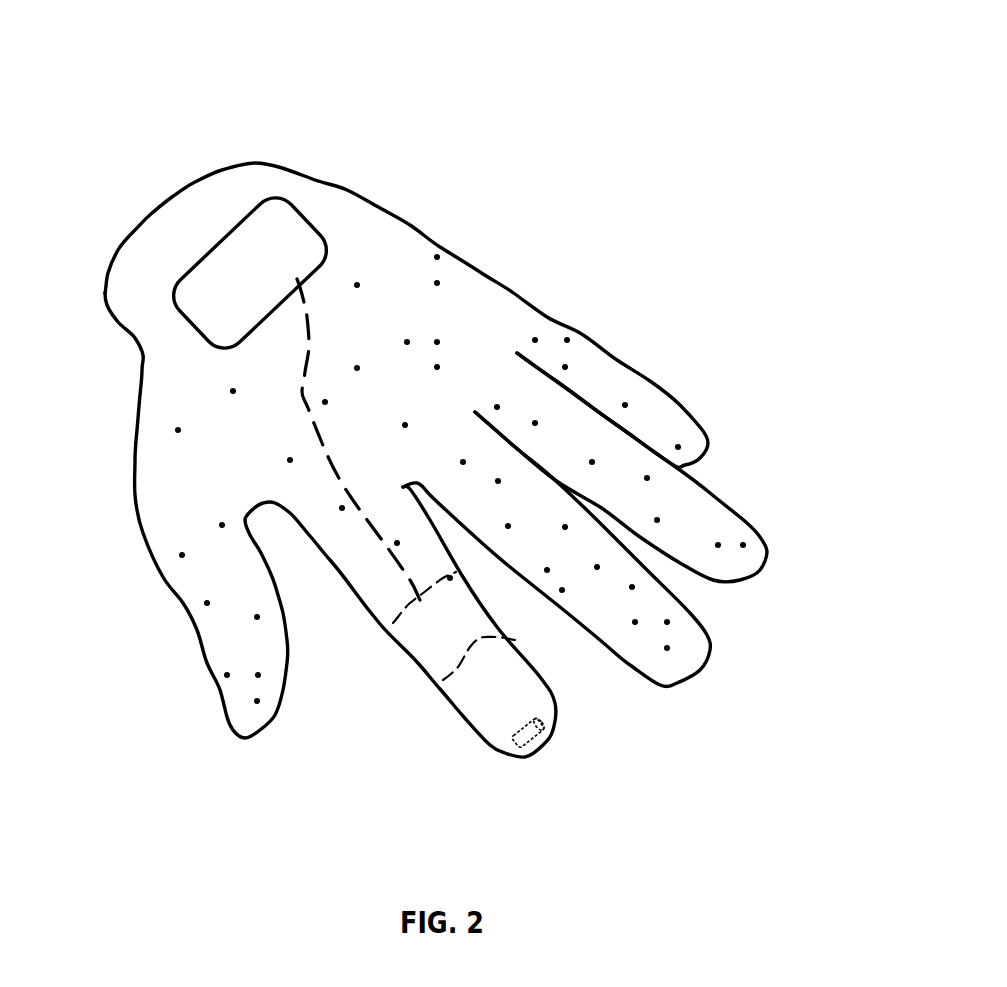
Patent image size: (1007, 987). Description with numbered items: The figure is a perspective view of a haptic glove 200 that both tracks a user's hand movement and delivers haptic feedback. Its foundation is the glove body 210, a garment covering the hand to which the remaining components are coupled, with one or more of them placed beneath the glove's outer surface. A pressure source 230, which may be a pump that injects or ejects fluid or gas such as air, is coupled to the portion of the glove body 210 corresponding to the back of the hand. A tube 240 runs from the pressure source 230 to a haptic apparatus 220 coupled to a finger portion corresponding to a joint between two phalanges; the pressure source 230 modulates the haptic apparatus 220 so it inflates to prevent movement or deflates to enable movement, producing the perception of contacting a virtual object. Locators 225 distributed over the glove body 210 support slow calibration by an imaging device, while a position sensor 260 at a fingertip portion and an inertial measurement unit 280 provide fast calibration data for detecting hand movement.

The haptic glove 200 is at (66, 28).
The glove body 210 is at (138, 350).
The haptic apparatus 220 is at (425, 649).
The locators 225 is at (573, 334).
The pressure source 230 is at (267, 242).
The tube 240 is at (296, 402).
The position sensor 260 is at (551, 725).
The inertial measurement unit 280 is at (524, 748).